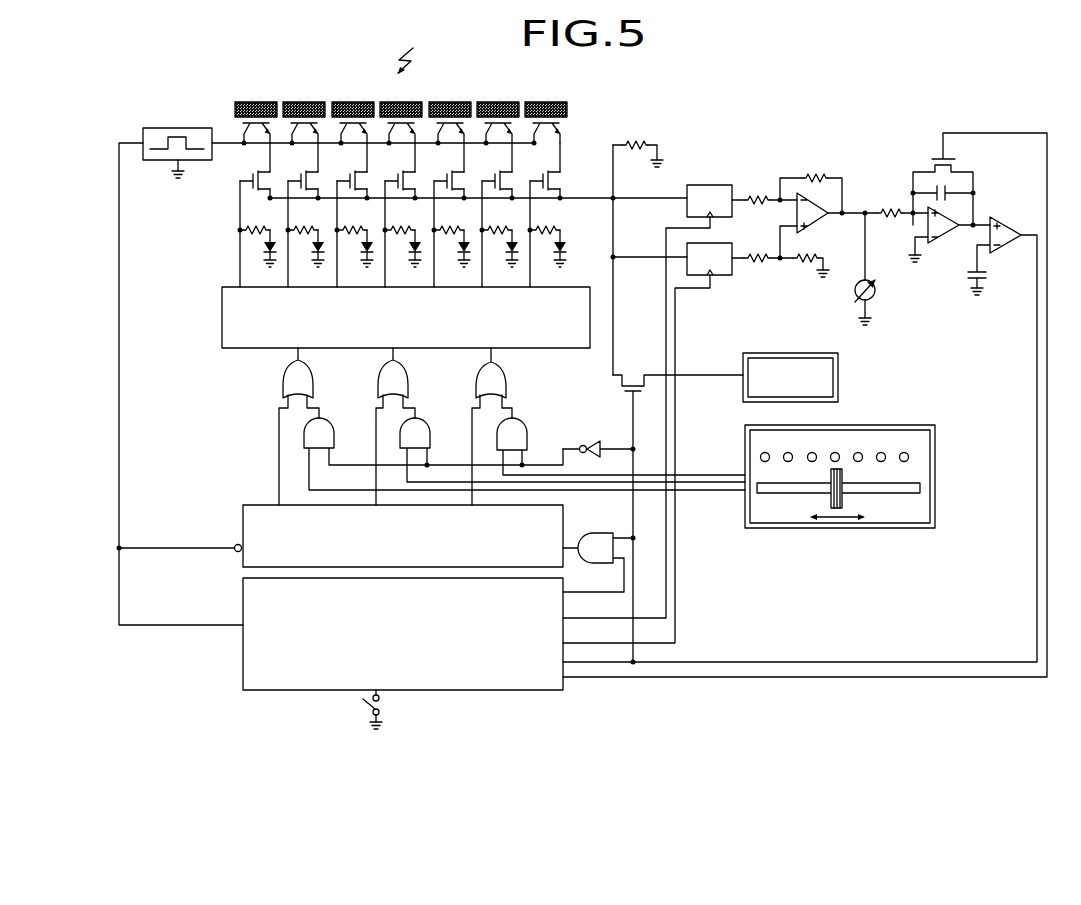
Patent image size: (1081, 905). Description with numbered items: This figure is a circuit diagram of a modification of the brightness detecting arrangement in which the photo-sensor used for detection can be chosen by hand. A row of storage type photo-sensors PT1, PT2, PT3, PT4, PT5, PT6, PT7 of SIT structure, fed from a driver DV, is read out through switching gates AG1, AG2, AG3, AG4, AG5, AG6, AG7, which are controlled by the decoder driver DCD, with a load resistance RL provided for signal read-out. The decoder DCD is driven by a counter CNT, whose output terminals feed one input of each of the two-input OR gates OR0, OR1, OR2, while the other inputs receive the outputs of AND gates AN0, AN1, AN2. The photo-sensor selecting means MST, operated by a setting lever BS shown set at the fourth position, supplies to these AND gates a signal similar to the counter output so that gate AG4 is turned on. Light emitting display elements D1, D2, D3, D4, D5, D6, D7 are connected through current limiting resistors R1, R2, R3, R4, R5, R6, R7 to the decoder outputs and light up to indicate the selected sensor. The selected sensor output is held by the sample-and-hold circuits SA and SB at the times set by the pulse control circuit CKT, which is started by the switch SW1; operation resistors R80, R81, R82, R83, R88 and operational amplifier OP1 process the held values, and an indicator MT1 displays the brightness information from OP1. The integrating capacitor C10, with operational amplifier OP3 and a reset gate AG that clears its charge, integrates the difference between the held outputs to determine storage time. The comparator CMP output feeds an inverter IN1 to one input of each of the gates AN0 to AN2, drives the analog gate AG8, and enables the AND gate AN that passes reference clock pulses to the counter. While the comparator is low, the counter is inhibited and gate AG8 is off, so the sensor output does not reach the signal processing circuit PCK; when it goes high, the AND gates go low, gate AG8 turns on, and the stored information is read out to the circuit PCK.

The driver DV is at (186, 127).
The photo-sensor PT1 is at (528, 84).
The photo-sensor PT2 is at (480, 84).
The photo-sensor PT3 is at (432, 84).
The photo-sensor PT4 is at (386, 84).
The photo-sensor PT5 is at (335, 84).
The photo-sensor PT6 is at (286, 84).
The photo-sensor PT7 is at (238, 84).
The switching gate AG1 is at (542, 174).
The switching gate AG2 is at (494, 174).
The switching gate AG3 is at (446, 174).
The switching gate AG4 is at (397, 174).
The switching gate AG5 is at (349, 174).
The switching gate AG6 is at (300, 174).
The switching gate AG7 is at (252, 174).
The analog gate AG8 is at (620, 390).
The current limiting resistor R1 is at (541, 226).
The current limiting resistor R2 is at (493, 226).
The current limiting resistor R3 is at (445, 226).
The current limiting resistor R4 is at (396, 226).
The current limiting resistor R5 is at (348, 226).
The current limiting resistor R6 is at (310, 212).
The current limiting resistor R7 is at (262, 212).
The light emitting display element D1 is at (557, 248).
The light emitting display element D2 is at (509, 248).
The light emitting display element D3 is at (461, 248).
The light emitting display element D4 is at (412, 248).
The light emitting display element D5 is at (364, 248).
The light emitting display element D6 is at (315, 249).
The light emitting display element D7 is at (267, 249).
The load resistance RL is at (626, 131).
The sample-and-hold circuit SA is at (647, 401).
The sample-and-hold circuit SB is at (647, 443).
The operation resistor R80 is at (756, 194).
The operation resistor R81 is at (757, 265).
The operation resistor R82 is at (812, 173).
The operation resistor R83 is at (802, 265).
The operation resistor R88 is at (888, 207).
The operational amplifier OP1 is at (814, 226).
The operational amplifier OP3 is at (942, 246).
The reset gate AG is at (934, 153).
The integrating capacitor C10 is at (957, 188).
The comparator CMP is at (1002, 226).
The indicator MT1 is at (876, 292).
The decoder driver DCD is at (406, 317).
The OR gate OR0 is at (515, 376).
The OR gate OR1 is at (414, 375).
The OR gate OR2 is at (314, 375).
The AND gate AN0 is at (538, 434).
The AND gate AN1 is at (433, 432).
The AND gate AN2 is at (335, 432).
The AND gate AN is at (598, 562).
The inverter IN1 is at (592, 443).
The signal processing circuit PCK is at (790, 377).
The photo-sensor selecting means MST is at (840, 455).
The setting lever BS is at (830, 499).
The counter CNT is at (403, 536).
The pulse control circuit CKT is at (403, 634).
The switch SW1 is at (362, 704).